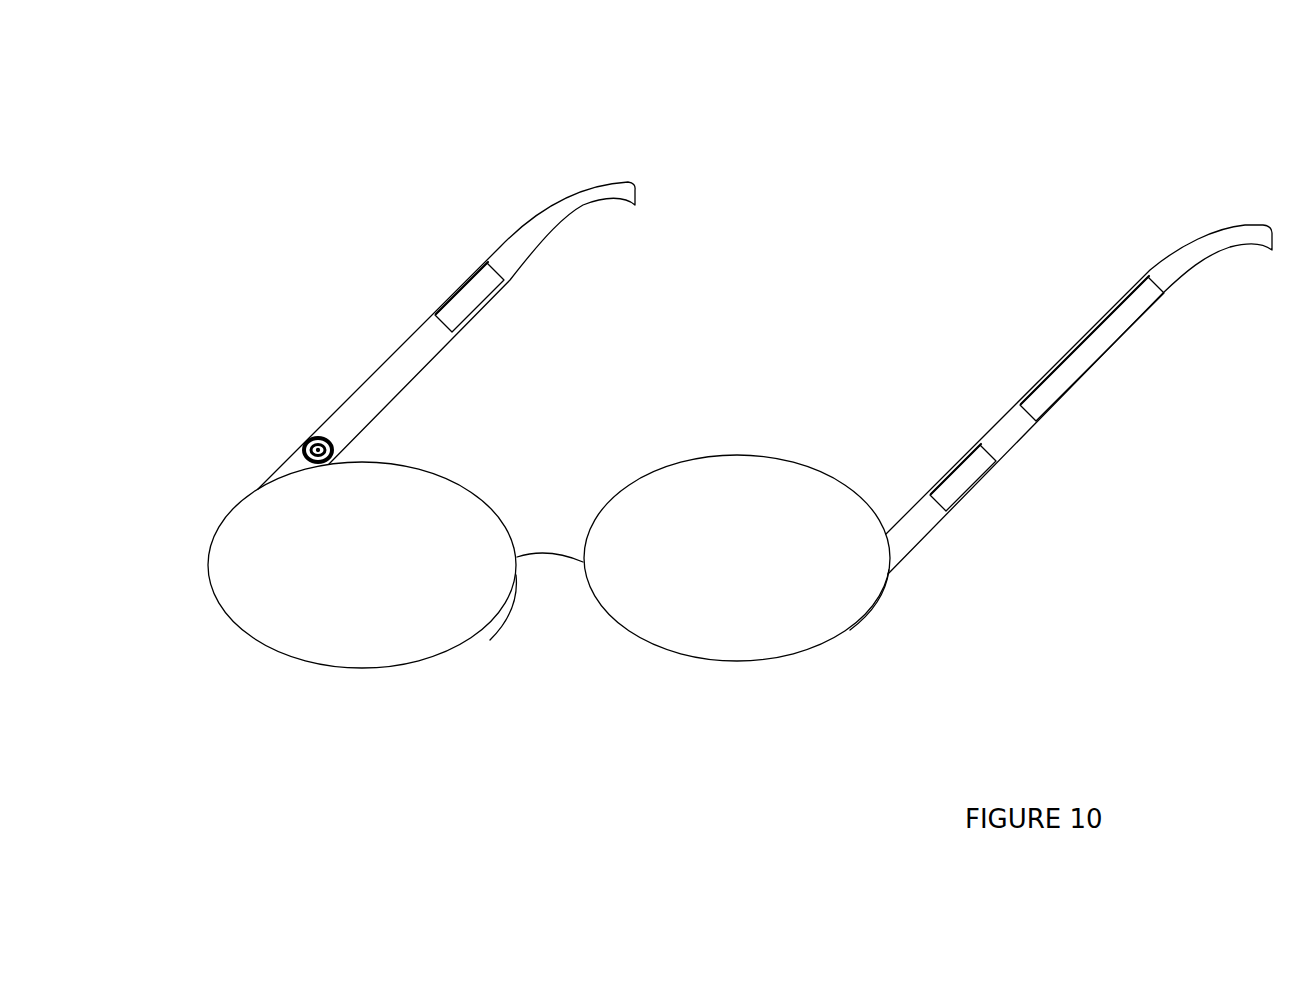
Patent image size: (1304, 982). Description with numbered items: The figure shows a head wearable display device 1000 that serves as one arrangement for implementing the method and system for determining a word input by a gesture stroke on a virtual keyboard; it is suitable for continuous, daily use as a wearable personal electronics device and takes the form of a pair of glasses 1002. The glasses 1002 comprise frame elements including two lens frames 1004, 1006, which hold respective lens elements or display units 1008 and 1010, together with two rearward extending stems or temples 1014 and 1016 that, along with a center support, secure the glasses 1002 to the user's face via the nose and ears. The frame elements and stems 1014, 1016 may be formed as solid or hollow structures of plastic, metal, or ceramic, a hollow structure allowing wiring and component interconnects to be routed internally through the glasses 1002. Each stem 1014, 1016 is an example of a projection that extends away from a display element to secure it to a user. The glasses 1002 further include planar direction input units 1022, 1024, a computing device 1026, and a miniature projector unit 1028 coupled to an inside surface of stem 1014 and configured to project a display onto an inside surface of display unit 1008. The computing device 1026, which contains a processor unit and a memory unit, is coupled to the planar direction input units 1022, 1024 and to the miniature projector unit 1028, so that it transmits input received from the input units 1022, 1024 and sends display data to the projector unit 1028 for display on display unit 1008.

The head wearable display device 1000 is at (400, 183).
The glasses 1002 is at (550, 555).
The lens frame 1004 is at (830, 642).
The lens frame 1006 is at (475, 637).
The display unit 1008 is at (720, 625).
The display unit 1010 is at (377, 640).
The stem 1014 is at (538, 220).
The stem 1016 is at (1162, 275).
The planar direction input unit 1022 is at (950, 487).
The planar direction input unit 1024 is at (477, 293).
The computing device 1026 is at (1057, 382).
The miniature projector unit 1028 is at (318, 437).